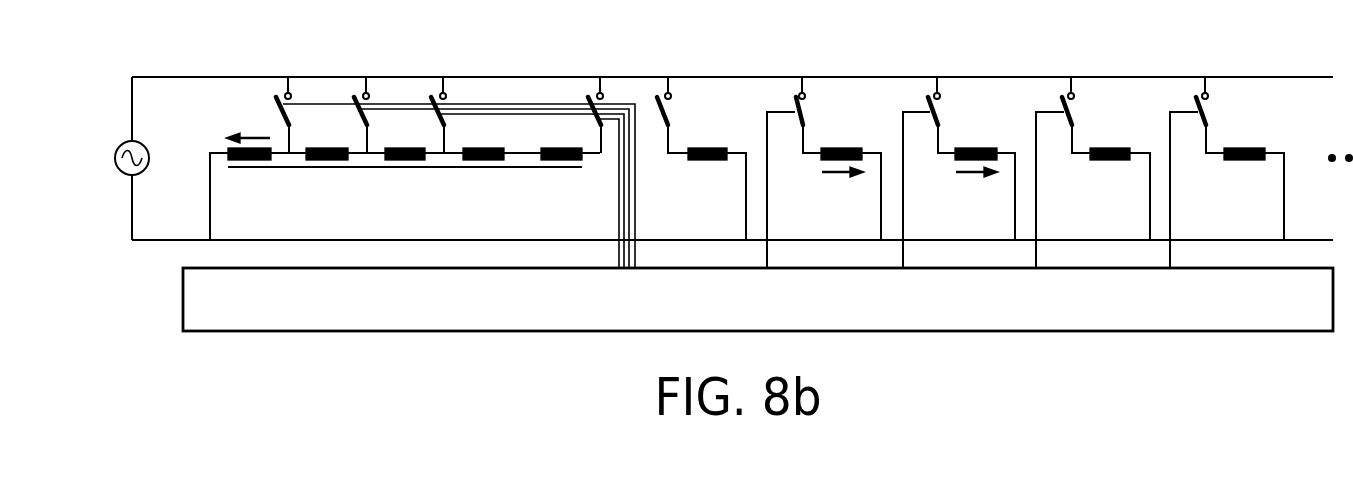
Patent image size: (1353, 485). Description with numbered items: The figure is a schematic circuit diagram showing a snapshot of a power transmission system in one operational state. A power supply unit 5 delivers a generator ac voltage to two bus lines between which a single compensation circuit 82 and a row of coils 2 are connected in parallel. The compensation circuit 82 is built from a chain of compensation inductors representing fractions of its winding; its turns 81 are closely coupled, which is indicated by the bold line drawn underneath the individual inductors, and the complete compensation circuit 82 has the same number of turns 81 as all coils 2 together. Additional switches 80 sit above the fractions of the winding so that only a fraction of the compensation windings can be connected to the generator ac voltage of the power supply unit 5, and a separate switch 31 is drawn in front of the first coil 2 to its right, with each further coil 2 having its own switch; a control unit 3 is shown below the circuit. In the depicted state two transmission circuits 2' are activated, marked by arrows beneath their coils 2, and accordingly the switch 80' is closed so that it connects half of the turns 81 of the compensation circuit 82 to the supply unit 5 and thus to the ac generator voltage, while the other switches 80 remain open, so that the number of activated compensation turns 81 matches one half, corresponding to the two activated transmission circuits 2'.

The coil 2 is at (976, 160).
The activated transmission circuit 2' is at (916, 139).
The control unit 3 is at (183, 300).
The power supply unit 5 is at (122, 150).
The switch 31 is at (670, 116).
The switch 80 is at (427, 88).
The switch 80' is at (424, 88).
The turns 81 is at (560, 167).
The compensation circuit 82 is at (202, 143).